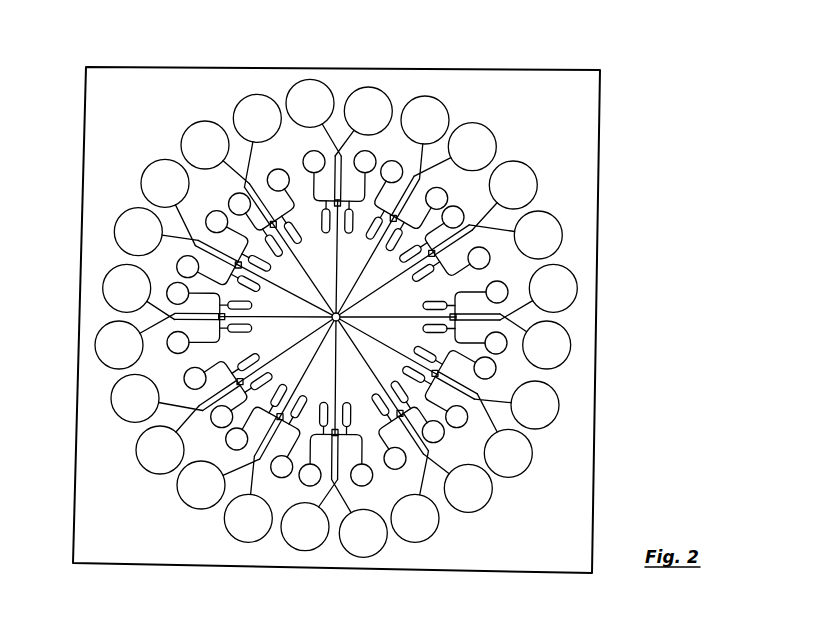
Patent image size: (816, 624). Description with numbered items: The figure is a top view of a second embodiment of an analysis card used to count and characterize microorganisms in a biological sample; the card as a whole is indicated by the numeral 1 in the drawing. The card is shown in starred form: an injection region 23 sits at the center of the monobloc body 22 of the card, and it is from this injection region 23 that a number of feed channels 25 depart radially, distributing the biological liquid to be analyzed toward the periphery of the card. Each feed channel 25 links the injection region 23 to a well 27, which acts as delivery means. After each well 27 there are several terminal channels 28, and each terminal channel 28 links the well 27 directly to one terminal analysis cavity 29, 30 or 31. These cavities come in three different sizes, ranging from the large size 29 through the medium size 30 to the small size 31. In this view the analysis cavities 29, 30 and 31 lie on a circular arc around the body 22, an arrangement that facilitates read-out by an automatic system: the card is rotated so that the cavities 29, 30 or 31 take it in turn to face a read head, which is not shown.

The microfluidic device 1 is at (398, 0).
The monobloc body 22 is at (567, 120).
The injection region 23 is at (236, 263).
The feed channel 25 is at (395, 288).
The well 27 is at (260, 53).
The terminal channel 28 is at (396, 216).
The terminal analysis cavity (large size) 29 is at (542, 412).
The terminal analysis cavity (medium size) 30 is at (487, 369).
The terminal analysis cavity (small size) 31 is at (250, 354).